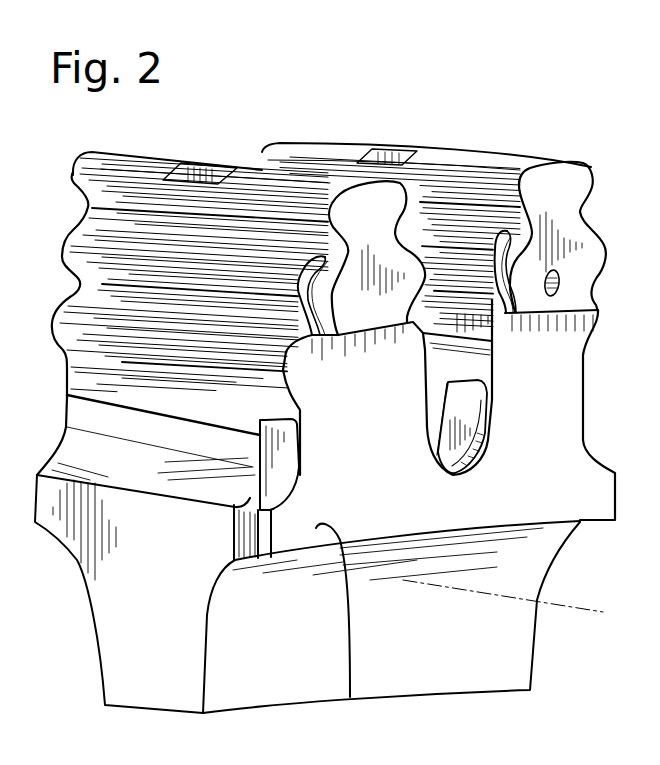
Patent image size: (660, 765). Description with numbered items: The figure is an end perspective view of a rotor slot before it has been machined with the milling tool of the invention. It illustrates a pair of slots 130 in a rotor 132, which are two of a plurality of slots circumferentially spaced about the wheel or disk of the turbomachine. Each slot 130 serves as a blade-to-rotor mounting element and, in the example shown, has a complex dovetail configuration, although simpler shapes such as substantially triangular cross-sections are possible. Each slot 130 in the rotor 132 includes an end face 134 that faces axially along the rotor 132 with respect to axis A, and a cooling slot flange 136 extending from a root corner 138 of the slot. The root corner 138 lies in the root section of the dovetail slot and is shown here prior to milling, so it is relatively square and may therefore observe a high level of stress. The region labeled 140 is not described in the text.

The slots 130 is at (184, 180).
The rotor 132 is at (290, 667).
The end face 134 is at (247, 526).
The cooling slot flange 136 is at (346, 629).
The root corner 138 is at (70, 396).
The chamfer face 140 is at (150, 468).
The axis A is at (577, 608).